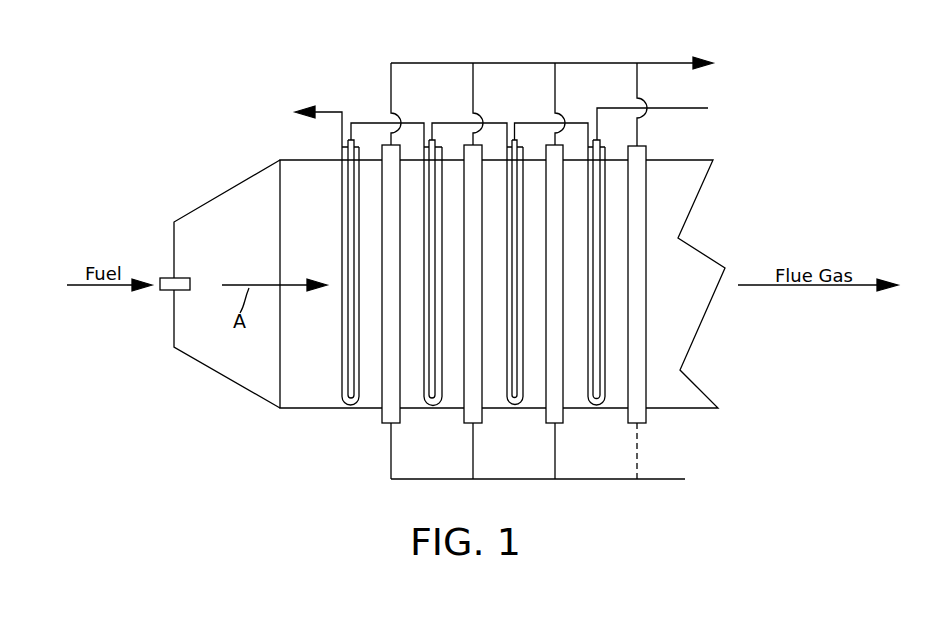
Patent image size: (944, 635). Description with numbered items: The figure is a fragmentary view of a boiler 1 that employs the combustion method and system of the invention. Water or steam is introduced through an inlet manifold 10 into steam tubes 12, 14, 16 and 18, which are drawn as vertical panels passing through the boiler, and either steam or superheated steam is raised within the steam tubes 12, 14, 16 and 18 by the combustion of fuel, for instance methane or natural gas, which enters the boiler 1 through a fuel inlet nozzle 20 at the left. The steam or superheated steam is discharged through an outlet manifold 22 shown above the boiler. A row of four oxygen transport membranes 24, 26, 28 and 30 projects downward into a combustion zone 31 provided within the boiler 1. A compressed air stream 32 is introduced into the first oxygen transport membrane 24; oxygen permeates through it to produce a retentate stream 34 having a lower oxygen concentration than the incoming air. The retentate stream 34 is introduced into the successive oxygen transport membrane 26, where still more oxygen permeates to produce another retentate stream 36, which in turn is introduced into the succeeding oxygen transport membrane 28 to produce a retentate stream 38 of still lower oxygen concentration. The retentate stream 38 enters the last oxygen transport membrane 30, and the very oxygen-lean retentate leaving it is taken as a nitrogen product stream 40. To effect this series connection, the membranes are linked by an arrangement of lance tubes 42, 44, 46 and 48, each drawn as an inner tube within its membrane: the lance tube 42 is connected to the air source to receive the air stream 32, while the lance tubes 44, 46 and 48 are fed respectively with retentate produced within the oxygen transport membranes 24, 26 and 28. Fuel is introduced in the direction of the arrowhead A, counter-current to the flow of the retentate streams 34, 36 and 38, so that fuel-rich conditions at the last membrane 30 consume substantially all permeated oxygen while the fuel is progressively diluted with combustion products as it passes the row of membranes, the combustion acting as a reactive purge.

The boiler 1 is at (210, 402).
The inlet manifold 10 is at (585, 481).
The steam tube 12 is at (380, 413).
The steam tube 14 is at (463, 413).
The steam tube 16 is at (545, 413).
The steam tube 18 is at (628, 422).
The fuel inlet nozzle 20 is at (183, 278).
The outlet manifold 22 is at (557, 63).
The oxygen transport membrane 24 is at (606, 278).
The oxygen transport membrane 26 is at (524, 265).
The oxygen transport membrane 28 is at (443, 265).
The oxygen transport membrane 30 is at (360, 237).
The combustion zone 31 is at (315, 378).
The compressed air stream 32 is at (687, 110).
The retentate stream 34 is at (573, 122).
The retentate stream 36 is at (488, 122).
The retentate stream 38 is at (405, 122).
The nitrogen product stream 40 is at (323, 111).
The lance tube 42 is at (596, 173).
The lance tube 44 is at (517, 200).
The lance tube 46 is at (434, 200).
The lance tube 48 is at (349, 197).